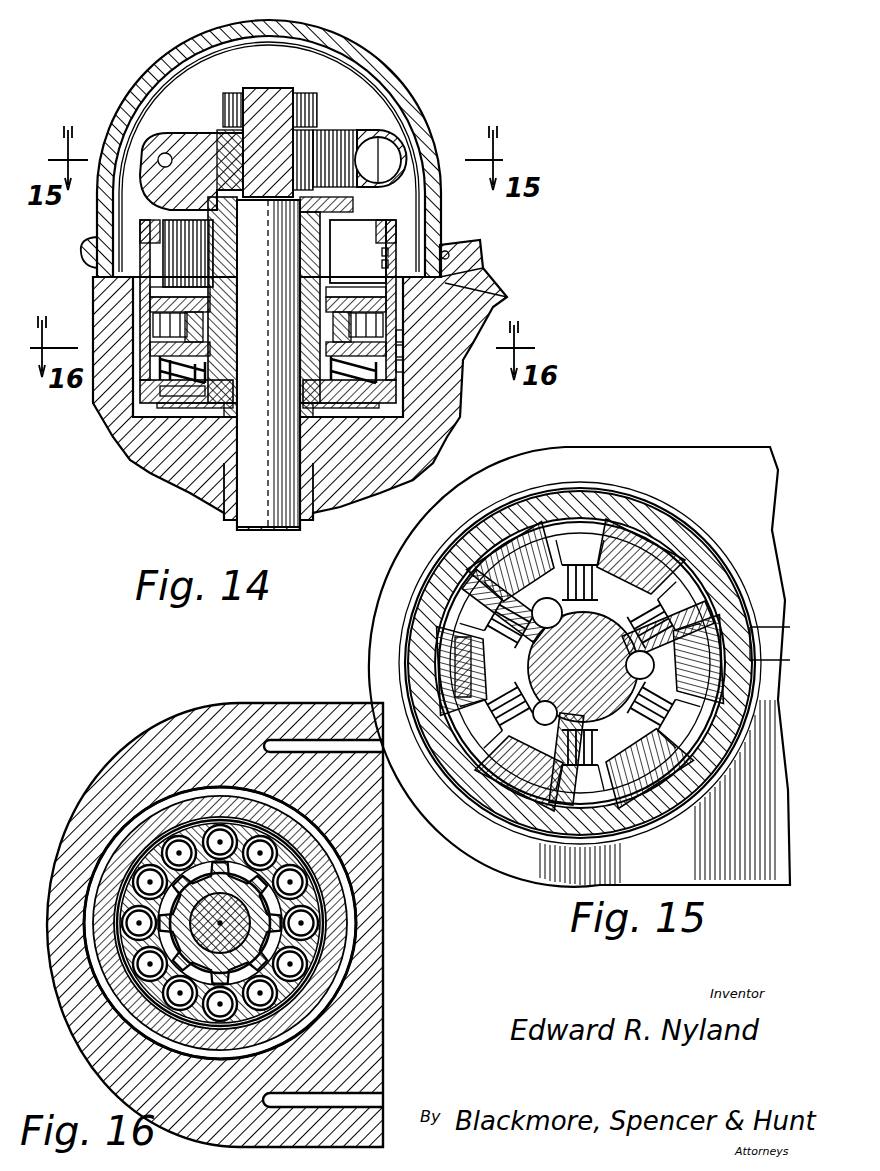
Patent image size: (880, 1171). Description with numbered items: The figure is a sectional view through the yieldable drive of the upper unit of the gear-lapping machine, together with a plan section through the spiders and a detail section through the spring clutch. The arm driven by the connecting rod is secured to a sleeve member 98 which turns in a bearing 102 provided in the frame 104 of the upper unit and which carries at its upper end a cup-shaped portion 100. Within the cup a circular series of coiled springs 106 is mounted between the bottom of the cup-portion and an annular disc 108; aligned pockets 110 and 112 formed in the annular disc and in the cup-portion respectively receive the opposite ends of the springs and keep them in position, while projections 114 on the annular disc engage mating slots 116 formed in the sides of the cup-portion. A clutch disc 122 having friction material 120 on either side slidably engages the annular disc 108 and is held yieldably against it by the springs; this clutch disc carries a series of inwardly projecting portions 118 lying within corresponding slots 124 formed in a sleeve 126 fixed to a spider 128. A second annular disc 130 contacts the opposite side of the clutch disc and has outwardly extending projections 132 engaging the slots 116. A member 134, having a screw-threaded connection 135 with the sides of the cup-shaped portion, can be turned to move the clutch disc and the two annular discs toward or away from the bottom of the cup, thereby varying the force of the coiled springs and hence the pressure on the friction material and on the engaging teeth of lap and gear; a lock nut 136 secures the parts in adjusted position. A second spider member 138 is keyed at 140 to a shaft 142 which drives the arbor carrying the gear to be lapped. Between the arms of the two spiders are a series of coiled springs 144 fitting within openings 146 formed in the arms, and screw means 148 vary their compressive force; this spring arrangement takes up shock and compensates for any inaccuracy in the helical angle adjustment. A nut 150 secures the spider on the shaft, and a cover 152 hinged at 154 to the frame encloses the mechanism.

In FIG. 14, the sleeve member 98 is at (310, 490).
In FIG. 14, the cup-shaped portion 100 is at (393, 370).
In FIG. 16, the cup-shaped portion 100 is at (137, 837).
In FIG. 14, the bearing 102 is at (310, 447).
In FIG. 14, the frame 104 is at (433, 425).
In FIG. 14, the coiled springs 106 is at (183, 387).
In FIG. 16, the coiled springs 106 is at (127, 900).
In FIG. 14, the annular disc 108 is at (383, 337).
In FIG. 16, the annular disc 108 is at (280, 860).
In FIG. 14, the pockets 110 is at (200, 338).
In FIG. 14, the pockets 112 is at (170, 380).
In FIG. 14, the projections 114 is at (387, 353).
In FIG. 16, the projections 114 is at (170, 827).
In FIG. 14, the slots 116 is at (390, 323).
In FIG. 16, the slots 116 is at (157, 820).
In FIG. 14, the inwardly projecting portions 118 is at (195, 327).
In FIG. 14, the friction material 120 is at (193, 315).
In FIG. 14, the clutch disc 122 is at (180, 330).
In FIG. 14, the slots 124 is at (222, 272).
In FIG. 16, the slots 124 is at (263, 890).
In FIG. 14, the sleeve 126 is at (225, 385).
In FIG. 16, the sleeve 126 is at (237, 873).
In FIG. 14, the spider 128 is at (158, 150).
In FIG. 15, the spider 128 is at (620, 563).
In FIG. 14, the second annular disc 130 is at (200, 300).
In FIG. 14, the outwardly extending projections 132 is at (147, 303).
In FIG. 14, the member 134 is at (388, 217).
In FIG. 14, the screw-threaded connection 135 is at (382, 263).
In FIG. 14, the lock nut 136 is at (382, 253).
In FIG. 14, the second spider member 138 is at (392, 165).
In FIG. 15, the second spider member 138 is at (673, 623).
In FIG. 14, the key 140 is at (293, 150).
In FIG. 15, the key 140 is at (588, 688).
In FIG. 14, the shaft 142 is at (283, 225).
In FIG. 15, the shaft 142 is at (545, 713).
In FIG. 16, the shaft 142 is at (140, 977).
In FIG. 15, the coiled springs 144 is at (637, 617).
In FIG. 15, the openings 146 is at (563, 540).
In FIG. 14, the screw means 148 is at (423, 128).
In FIG. 15, the screw means 148 is at (500, 577).
In FIG. 14, the nut 150 is at (308, 98).
In FIG. 14, the cover 152 is at (355, 45).
In FIG. 15, the cover 152 is at (457, 557).
In FIG. 14, the hinge 154 is at (428, 248).